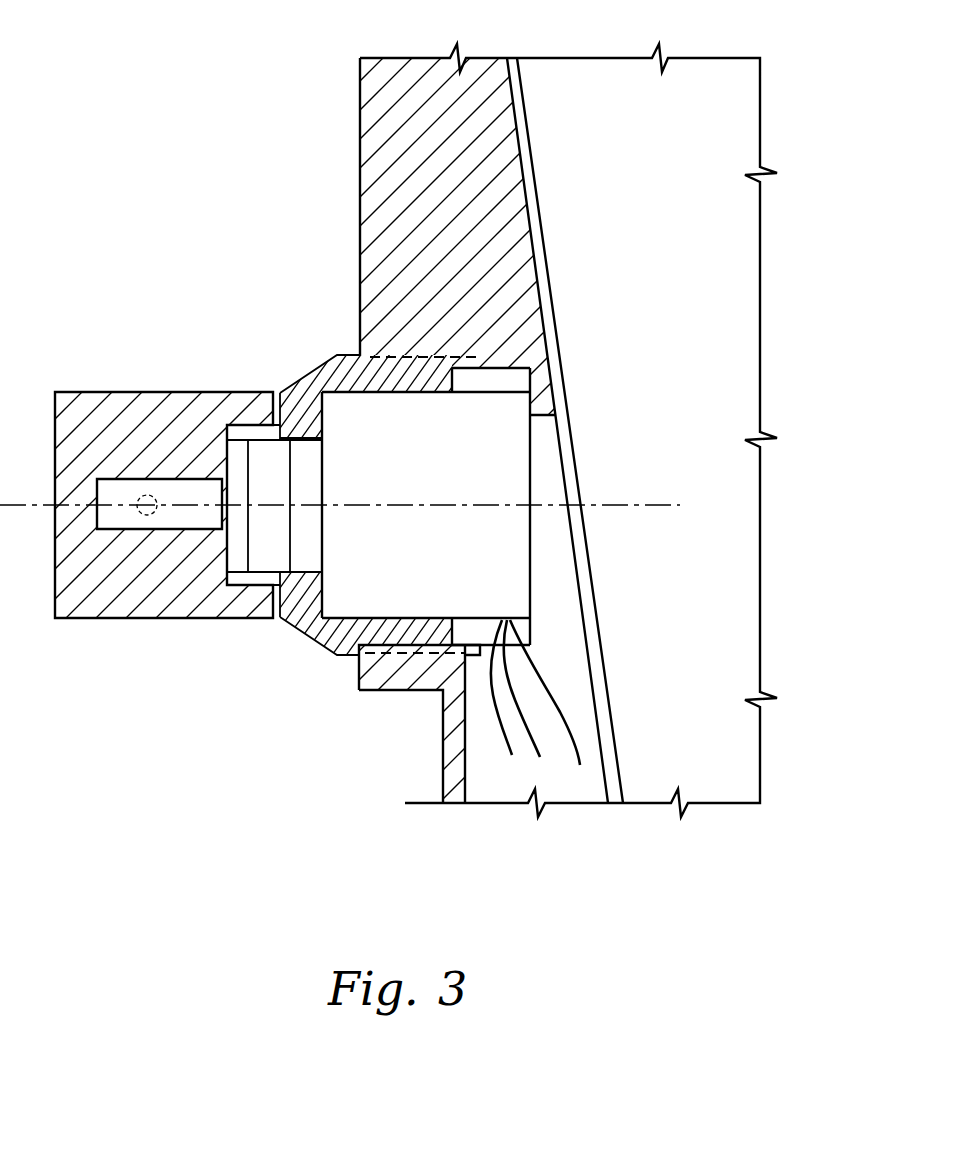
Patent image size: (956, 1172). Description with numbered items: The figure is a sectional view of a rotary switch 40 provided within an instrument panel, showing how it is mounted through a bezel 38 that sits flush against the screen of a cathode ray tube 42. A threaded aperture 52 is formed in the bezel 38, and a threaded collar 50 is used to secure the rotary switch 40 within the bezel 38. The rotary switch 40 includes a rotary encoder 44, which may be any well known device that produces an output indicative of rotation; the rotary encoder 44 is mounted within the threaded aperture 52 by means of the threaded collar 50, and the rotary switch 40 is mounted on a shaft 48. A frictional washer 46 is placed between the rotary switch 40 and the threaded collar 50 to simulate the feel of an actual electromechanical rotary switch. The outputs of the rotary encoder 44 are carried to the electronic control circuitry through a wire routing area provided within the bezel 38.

The bezel 38 is at (430, 77).
The rotary switch 40 is at (103, 607).
The cathode ray tube 42 is at (723, 255).
The rotary encoder 44 is at (508, 483).
The frictional washer 46 is at (280, 620).
The shaft 48 is at (152, 495).
The threaded collar 50 is at (327, 660).
The threaded aperture 52 is at (467, 340).